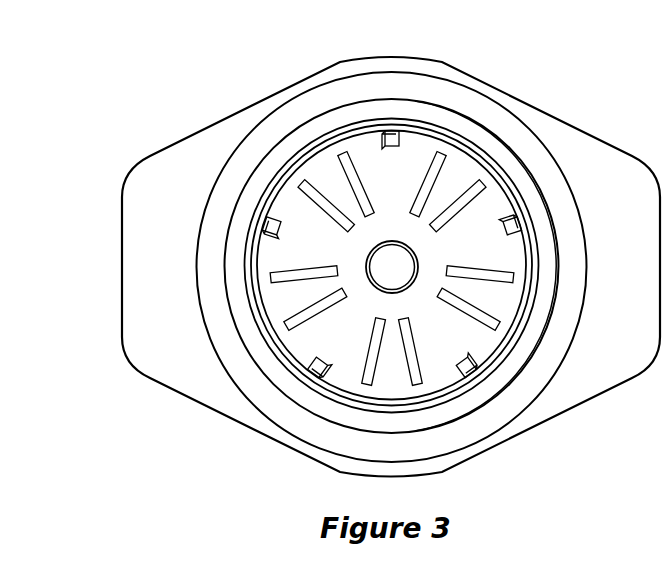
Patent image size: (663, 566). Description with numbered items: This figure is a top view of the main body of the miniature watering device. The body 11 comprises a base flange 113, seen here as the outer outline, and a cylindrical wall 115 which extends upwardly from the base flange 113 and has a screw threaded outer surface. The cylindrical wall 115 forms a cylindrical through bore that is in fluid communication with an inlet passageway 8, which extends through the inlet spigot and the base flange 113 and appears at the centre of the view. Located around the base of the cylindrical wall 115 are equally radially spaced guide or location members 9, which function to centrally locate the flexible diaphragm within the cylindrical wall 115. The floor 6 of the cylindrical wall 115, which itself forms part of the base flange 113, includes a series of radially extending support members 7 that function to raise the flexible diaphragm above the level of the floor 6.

The body 11 is at (172, 107).
The base flange 113 is at (141, 255).
The cylindrical wall 115 is at (292, 148).
The floor 6 is at (458, 177).
The support members 7 is at (463, 203).
The inlet passageway 8 is at (390, 270).
The guide or location members 9 is at (393, 142).